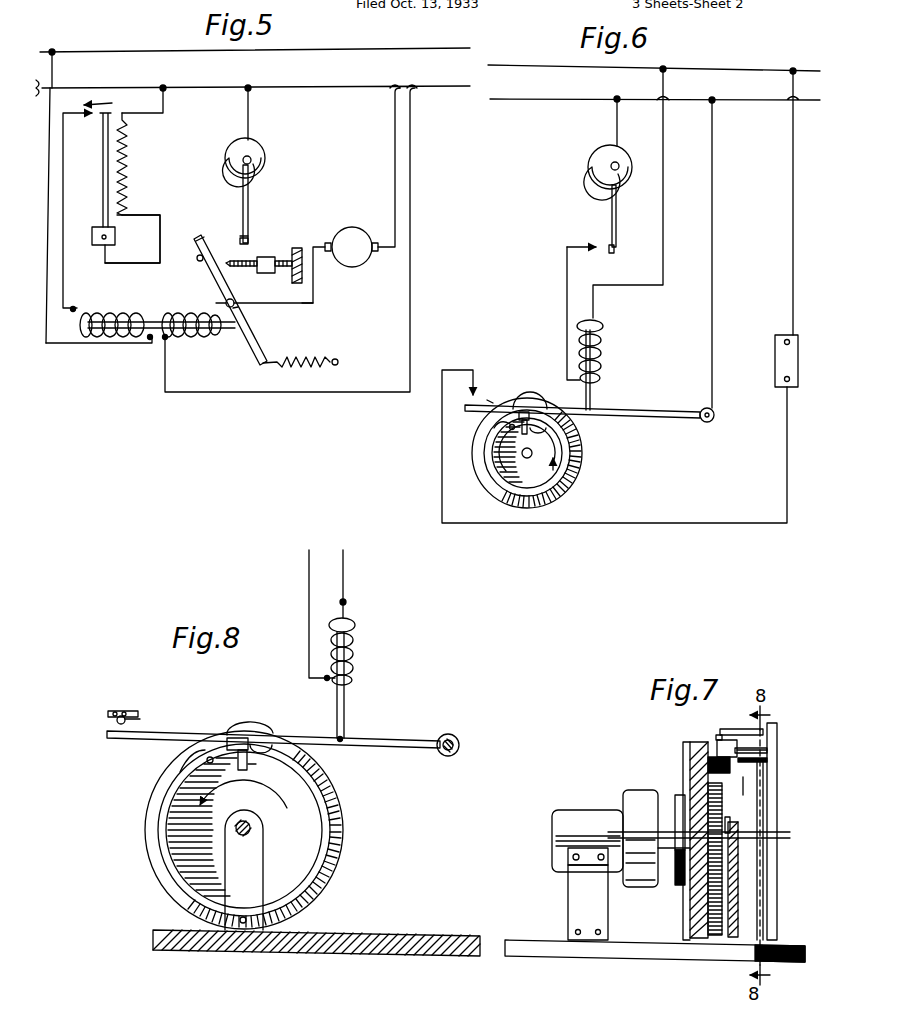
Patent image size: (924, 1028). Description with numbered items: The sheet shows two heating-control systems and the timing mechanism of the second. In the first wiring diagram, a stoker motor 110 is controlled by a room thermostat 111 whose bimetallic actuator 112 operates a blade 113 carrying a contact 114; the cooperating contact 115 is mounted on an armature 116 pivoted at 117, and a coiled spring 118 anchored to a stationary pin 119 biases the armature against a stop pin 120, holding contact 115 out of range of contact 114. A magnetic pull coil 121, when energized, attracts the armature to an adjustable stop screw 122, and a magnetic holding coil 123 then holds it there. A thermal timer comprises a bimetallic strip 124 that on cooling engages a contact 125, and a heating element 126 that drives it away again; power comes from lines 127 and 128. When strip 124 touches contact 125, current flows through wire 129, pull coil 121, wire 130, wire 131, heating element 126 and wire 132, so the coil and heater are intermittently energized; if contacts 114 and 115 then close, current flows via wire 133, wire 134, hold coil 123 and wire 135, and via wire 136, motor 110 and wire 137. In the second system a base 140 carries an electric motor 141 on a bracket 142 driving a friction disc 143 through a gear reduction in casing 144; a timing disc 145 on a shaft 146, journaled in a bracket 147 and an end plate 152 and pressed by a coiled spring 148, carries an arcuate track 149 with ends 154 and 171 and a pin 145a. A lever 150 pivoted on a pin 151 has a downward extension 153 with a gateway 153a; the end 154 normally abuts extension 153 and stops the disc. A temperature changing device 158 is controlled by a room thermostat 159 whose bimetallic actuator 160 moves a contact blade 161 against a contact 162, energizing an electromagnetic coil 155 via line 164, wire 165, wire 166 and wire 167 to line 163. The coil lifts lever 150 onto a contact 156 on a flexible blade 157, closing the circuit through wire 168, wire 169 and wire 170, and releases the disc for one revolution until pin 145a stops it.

In FIG. 5, the motor 110 is at (352, 227).
In FIG. 5, the room thermostat 111 is at (268, 150).
In FIG. 5, the bimetallic actuator 112 is at (262, 170).
In FIG. 5, the blade 113 is at (248, 219).
In FIG. 5, the contact 114 is at (240, 235).
In FIG. 5, the cooperating contact 115 is at (200, 234).
In FIG. 5, the armature 116 is at (235, 300).
In FIG. 5, the pivot 117 is at (238, 308).
In FIG. 5, the coiled spring 118 is at (327, 360).
In FIG. 5, the stationary pin 119 is at (339, 362).
In FIG. 5, the stop pin 120 is at (197, 258).
In FIG. 5, the magnetic pull coil 121 is at (107, 311).
In FIG. 5, the adjustable stop screw 122 is at (298, 248).
In FIG. 5, the magnetic holding coil 123 is at (178, 311).
In FIG. 5, the bimetallic strip 124 is at (103, 222).
In FIG. 5, the contact 125 is at (94, 116).
In FIG. 5, the heating element 126 is at (123, 163).
In FIG. 5, the line wire 127 is at (366, 50).
In FIG. 5, the line wire 128 is at (446, 85).
In FIG. 5, the wire 129 is at (57, 75).
In FIG. 5, the wire 130 is at (88, 186).
In FIG. 5, the wire 131 is at (155, 215).
In FIG. 5, the wire 132 is at (163, 110).
In FIG. 5, the wire 133 is at (248, 118).
In FIG. 5, the wire 134 is at (219, 306).
In FIG. 5, the wire 135 is at (410, 318).
In FIG. 5, the wire 136 is at (303, 309).
In FIG. 5, the wire 137 is at (394, 154).
In FIG. 8, the base 140 is at (371, 934).
In FIG. 7, the base 140 is at (515, 939).
In FIG. 7, the electric motor 141 is at (578, 814).
In FIG. 7, the bracket 142 is at (568, 897).
In FIG. 7, the friction disc 143 is at (678, 882).
In FIG. 7, the casing 144 is at (632, 790).
In FIG. 6, the timing disc 145 is at (576, 492).
In FIG. 8, the timing disc 145 is at (346, 853).
In FIG. 7, the timing disc 145 is at (690, 745).
In FIG. 6, the pin 145a is at (511, 424).
In FIG. 8, the pin 145a is at (210, 756).
In FIG. 6, the shaft 146 is at (535, 451).
In FIG. 8, the shaft 146 is at (251, 829).
In FIG. 7, the shaft 146 is at (782, 838).
In FIG. 8, the bracket 147 is at (259, 876).
In FIG. 7, the bracket 147 is at (731, 926).
In FIG. 7, the coiled spring 148 is at (730, 833).
In FIG. 6, the arcuate track 149 is at (566, 460).
In FIG. 8, the arcuate track 149 is at (331, 812).
In FIG. 7, the arcuate track 149 is at (705, 926).
In FIG. 6, the lever 150 is at (646, 410).
In FIG. 8, the lever 150 is at (379, 738).
In FIG. 7, the lever 150 is at (745, 763).
In FIG. 6, the pin 151 is at (713, 411).
In FIG. 8, the pin 151 is at (449, 734).
In FIG. 7, the pin 151 is at (781, 753).
In FIG. 7, the end plate 152 is at (773, 792).
In FIG. 6, the downward extension 153 is at (520, 415).
In FIG. 8, the downward extension 153 is at (230, 736).
In FIG. 7, the downward extension 153 is at (748, 792).
In FIG. 6, the gateway 153a is at (541, 431).
In FIG. 8, the gateway 153a is at (250, 765).
In FIG. 7, the gateway 153a is at (708, 771).
In FIG. 6, the end of track 154 is at (548, 409).
In FIG. 8, the end of track 154 is at (271, 739).
In FIG. 7, the end of track 154 is at (716, 760).
In FIG. 6, the electromagnetic coil 155 is at (603, 328).
In FIG. 8, the electromagnetic coil 155 is at (355, 631).
In FIG. 6, the contact 156 is at (489, 399).
In FIG. 8, the contact 156 is at (140, 719).
In FIG. 7, the contact 156 is at (717, 734).
In FIG. 8, the flexible blade 157 is at (131, 712).
In FIG. 7, the flexible blade 157 is at (742, 727).
In FIG. 6, the temperature changing device 158 is at (775, 366).
In FIG. 6, the room thermostat 159 is at (618, 253).
In FIG. 6, the bimetallic actuator 160 is at (627, 152).
In FIG. 6, the contact blade 161 is at (615, 231).
In FIG. 6, the contact 162 is at (597, 250).
In FIG. 6, the line wire 163 is at (703, 67).
In FIG. 6, the line wire 164 is at (566, 99).
In FIG. 6, the wire 165 is at (617, 126).
In FIG. 6, the wire 166 is at (567, 280).
In FIG. 8, the wire 166 is at (309, 609).
In FIG. 6, the wire 167 is at (664, 215).
In FIG. 8, the wire 167 is at (345, 585).
In FIG. 6, the wire 168 is at (712, 333).
In FIG. 6, the wire 169 is at (442, 495).
In FIG. 6, the wire 170 is at (790, 259).
In FIG. 6, the end of track 171 is at (503, 425).
In FIG. 8, the end of track 171 is at (197, 754).